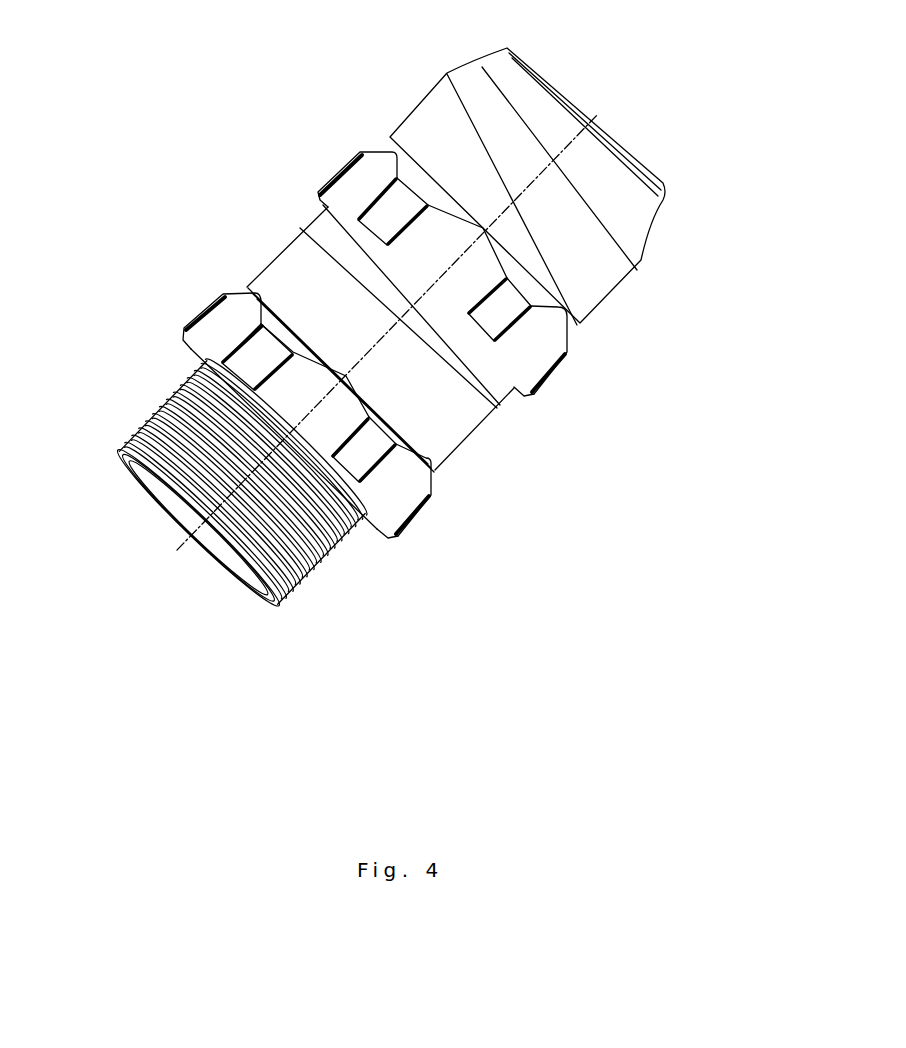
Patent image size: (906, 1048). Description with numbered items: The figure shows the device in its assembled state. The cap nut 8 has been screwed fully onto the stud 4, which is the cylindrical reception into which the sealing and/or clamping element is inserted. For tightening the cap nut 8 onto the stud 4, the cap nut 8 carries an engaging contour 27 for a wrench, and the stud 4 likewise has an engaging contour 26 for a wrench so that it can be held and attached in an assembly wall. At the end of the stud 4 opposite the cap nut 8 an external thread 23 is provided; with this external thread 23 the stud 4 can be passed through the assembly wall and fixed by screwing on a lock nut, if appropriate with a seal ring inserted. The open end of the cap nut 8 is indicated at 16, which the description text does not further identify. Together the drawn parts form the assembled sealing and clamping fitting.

The stud 4 is at (500, 589).
The cap nut 8 is at (453, 112).
The socket end 16 is at (629, 103).
The engaging contour 27 is at (357, 177).
The engaging contour 26 is at (232, 319).
The external thread 23 is at (320, 570).